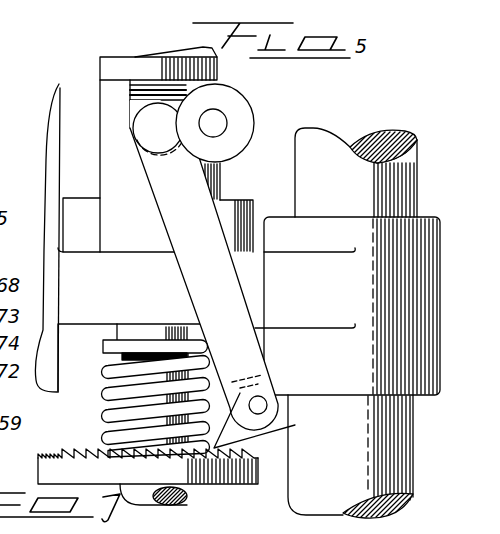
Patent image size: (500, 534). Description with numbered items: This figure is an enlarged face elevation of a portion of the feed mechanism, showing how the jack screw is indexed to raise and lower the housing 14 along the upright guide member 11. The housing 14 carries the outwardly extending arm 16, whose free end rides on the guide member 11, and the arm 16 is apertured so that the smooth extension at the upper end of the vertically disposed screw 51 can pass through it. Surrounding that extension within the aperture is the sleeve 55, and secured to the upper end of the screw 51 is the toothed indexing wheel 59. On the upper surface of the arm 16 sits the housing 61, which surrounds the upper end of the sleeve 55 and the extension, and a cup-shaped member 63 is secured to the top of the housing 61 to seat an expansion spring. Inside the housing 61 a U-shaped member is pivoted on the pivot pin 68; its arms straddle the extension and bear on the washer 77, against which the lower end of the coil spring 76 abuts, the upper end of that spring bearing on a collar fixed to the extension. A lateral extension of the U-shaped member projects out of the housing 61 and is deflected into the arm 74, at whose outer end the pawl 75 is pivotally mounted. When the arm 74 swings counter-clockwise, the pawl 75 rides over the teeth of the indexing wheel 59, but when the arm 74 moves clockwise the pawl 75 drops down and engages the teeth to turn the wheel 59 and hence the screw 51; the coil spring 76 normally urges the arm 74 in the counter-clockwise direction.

The guide member 11 is at (378, 324).
The housing 14 is at (53, 165).
The arm 16 is at (108, 298).
The screw 51 is at (189, 498).
The sleeve 55 is at (184, 284).
The indexing wheel 59 is at (250, 486).
The housing 61 is at (117, 148).
The cup-shaped member 63 is at (122, 68).
The pivot pin 68 is at (215, 124).
The arm 74 is at (228, 292).
The pawl 75 is at (245, 430).
The coil spring 76 is at (168, 73).
The washer 77 is at (187, 103).